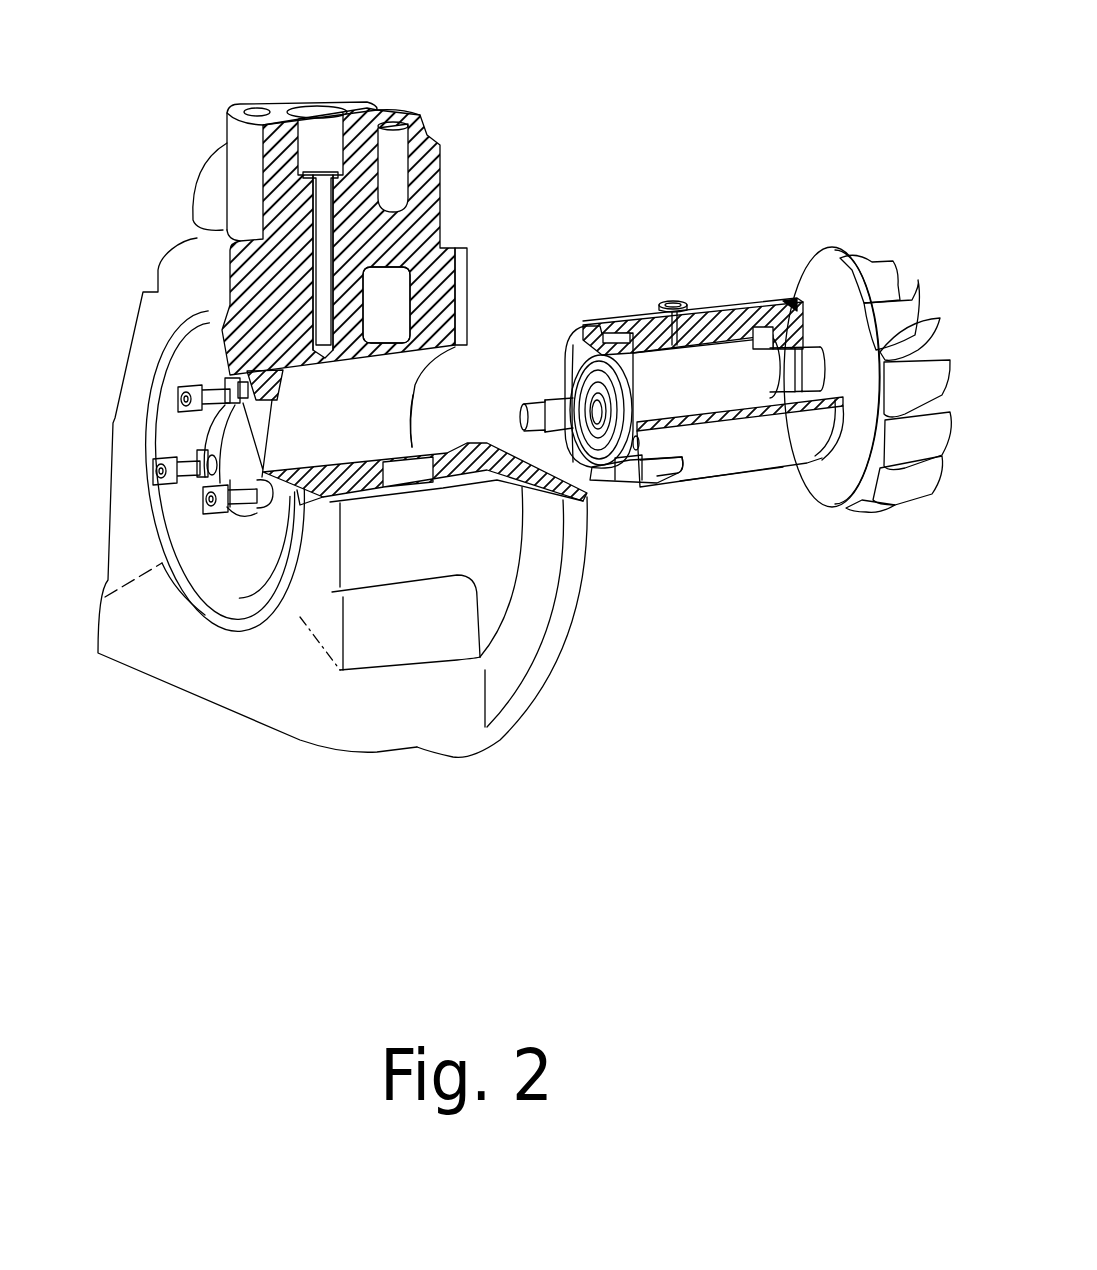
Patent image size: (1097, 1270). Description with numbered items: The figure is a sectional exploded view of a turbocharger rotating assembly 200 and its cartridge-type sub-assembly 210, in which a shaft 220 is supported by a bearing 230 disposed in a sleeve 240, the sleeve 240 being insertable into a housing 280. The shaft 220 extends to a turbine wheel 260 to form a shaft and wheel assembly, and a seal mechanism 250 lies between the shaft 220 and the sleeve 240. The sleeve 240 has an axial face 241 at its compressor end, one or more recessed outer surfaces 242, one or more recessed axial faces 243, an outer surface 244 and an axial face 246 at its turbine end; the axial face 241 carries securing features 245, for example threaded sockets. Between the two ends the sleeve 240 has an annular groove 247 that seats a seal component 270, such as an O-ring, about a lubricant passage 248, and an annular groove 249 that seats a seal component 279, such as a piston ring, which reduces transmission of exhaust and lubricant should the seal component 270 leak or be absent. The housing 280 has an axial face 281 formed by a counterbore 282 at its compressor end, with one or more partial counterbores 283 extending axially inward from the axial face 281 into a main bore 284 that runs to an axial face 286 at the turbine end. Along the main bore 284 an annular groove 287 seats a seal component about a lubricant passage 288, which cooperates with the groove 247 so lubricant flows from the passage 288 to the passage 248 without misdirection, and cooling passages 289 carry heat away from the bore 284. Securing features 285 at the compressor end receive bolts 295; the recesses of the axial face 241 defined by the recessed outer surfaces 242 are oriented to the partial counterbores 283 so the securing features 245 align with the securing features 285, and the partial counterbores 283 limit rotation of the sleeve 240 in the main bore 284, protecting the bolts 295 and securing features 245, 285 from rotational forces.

The turbocharger rotating assembly 200 is at (603, 60).
The cartridge assembly 210 is at (662, 230).
The shaft 220 is at (548, 400).
The bearing 230 is at (733, 400).
The sleeve 240 is at (763, 453).
The axial face 241 is at (613, 480).
The recessed outer surfaces 242 is at (580, 343).
The recessed axial faces 243 is at (643, 470).
The outer surface 244 is at (722, 473).
The securing features 245 is at (617, 340).
The axial face 246 is at (802, 488).
The annular groove 247 is at (660, 312).
The lubricant passage 248 is at (677, 347).
The annular groove 249 is at (790, 303).
The seal mechanism 250 is at (802, 360).
The turbine wheel 260 is at (815, 507).
The seal component 270 is at (663, 303).
The seal component 279 is at (792, 307).
The housing 280 is at (195, 238).
The axial face 281 is at (290, 490).
The counterbore 282 is at (243, 517).
The partial counterbores 283 is at (277, 380).
The main bore 284 is at (412, 433).
The securing features 285 is at (218, 462).
The axial face 286 is at (457, 353).
The annular groove 287 is at (318, 368).
The lubricant passage 288 is at (318, 362).
The cooling passages 289 is at (407, 320).
The bolts 295 is at (205, 492).